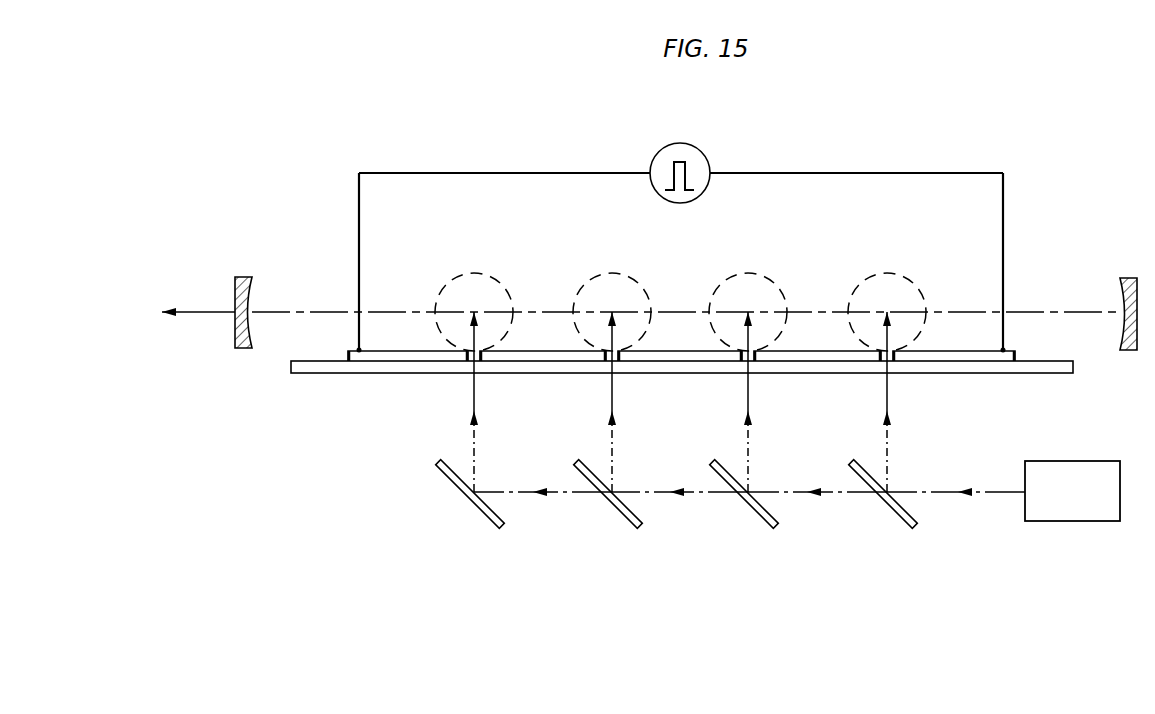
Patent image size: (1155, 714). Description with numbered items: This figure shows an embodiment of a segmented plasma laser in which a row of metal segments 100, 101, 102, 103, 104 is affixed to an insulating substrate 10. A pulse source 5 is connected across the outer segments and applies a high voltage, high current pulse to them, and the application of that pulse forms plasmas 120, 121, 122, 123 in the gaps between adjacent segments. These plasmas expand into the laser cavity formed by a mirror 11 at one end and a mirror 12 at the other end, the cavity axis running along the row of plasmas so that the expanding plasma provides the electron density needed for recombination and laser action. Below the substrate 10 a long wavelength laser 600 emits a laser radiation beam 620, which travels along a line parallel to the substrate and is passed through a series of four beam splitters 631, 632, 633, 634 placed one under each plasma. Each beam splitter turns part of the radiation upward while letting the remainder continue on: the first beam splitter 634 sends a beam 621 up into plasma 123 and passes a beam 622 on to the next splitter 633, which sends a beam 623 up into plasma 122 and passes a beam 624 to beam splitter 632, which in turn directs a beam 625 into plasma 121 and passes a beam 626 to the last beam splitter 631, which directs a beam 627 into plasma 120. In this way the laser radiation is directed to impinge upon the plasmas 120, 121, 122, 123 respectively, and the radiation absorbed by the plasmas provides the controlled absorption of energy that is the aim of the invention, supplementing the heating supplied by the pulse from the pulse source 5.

The pulse source 5 is at (681, 143).
The insulating substrate 10 is at (312, 364).
The mirror 11 is at (247, 277).
The mirror 12 is at (1125, 278).
The metal segment 100 is at (400, 355).
The metal segment 101 is at (540, 357).
The metal segment 102 is at (678, 357).
The metal segment 103 is at (812, 357).
The metal segment 104 is at (955, 357).
The plasma 120 is at (478, 273).
The plasma 121 is at (616, 273).
The plasma 122 is at (753, 273).
The plasma 123 is at (891, 273).
The long wavelength laser 600 is at (1070, 522).
The laser radiation beam 620 is at (974, 495).
The laser radiation beam 621 is at (886, 467).
The laser radiation beam 622 is at (829, 495).
The laser radiation beam 623 is at (751, 467).
The laser radiation beam 624 is at (694, 495).
The laser radiation beam 625 is at (614, 467).
The laser radiation beam 626 is at (556, 495).
The laser radiation beam 627 is at (476, 467).
The beam splitter 631 is at (500, 527).
The beam splitter 632 is at (638, 527).
The beam splitter 633 is at (775, 527).
The beam splitter 634 is at (913, 527).